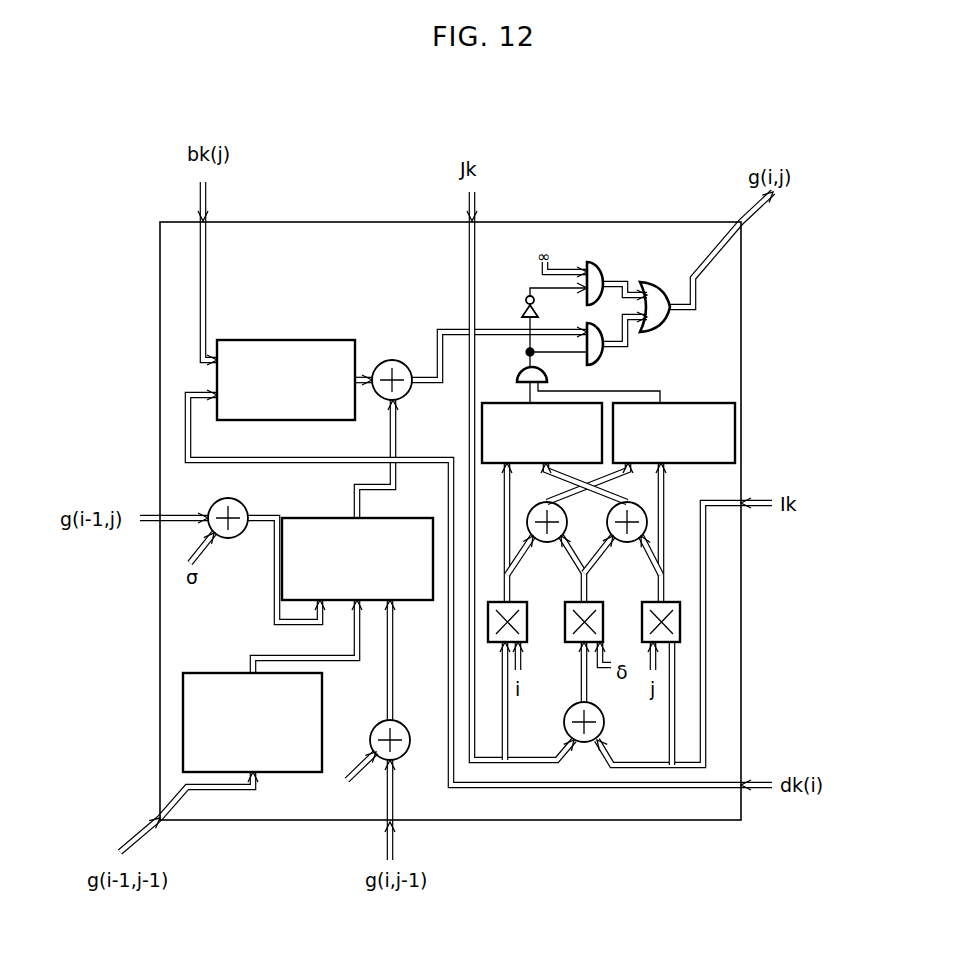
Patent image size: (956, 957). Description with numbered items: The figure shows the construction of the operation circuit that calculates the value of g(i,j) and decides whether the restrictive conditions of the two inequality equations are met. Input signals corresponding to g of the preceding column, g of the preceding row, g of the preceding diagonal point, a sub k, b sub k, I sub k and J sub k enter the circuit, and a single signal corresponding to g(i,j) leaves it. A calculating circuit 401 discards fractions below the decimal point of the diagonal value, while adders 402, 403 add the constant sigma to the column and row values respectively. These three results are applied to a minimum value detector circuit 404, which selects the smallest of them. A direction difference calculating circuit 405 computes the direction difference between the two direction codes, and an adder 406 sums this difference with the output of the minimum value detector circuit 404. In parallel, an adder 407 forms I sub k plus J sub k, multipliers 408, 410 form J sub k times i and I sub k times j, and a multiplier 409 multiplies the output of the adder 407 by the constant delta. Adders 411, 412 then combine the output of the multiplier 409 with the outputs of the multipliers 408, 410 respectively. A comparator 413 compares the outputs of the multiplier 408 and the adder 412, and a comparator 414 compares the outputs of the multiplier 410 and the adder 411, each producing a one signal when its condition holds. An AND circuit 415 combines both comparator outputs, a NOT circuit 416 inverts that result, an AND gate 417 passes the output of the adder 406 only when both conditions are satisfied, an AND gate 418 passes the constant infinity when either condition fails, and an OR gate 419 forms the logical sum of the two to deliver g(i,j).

The calculating circuit 401 is at (322, 719).
The adder 402 is at (242, 506).
The adder 403 is at (404, 727).
The minimum value detector circuit 404 is at (383, 518).
The direction difference calculating circuit 405 is at (310, 340).
The adder 406 is at (392, 360).
The adder 407 is at (599, 706).
The multiplier 408 is at (520, 602).
The multiplier 409 is at (597, 602).
The multiplier 410 is at (676, 594).
The adder 411 is at (561, 504).
The adder 412 is at (609, 528).
The comparator 413 is at (515, 403).
The comparator 414 is at (668, 403).
The AND circuit 415 is at (545, 374).
The NOT circuit 416 is at (537, 301).
The AND gate 417 is at (598, 353).
The AND gate 418 is at (603, 274).
The OR gate 419 is at (667, 317).